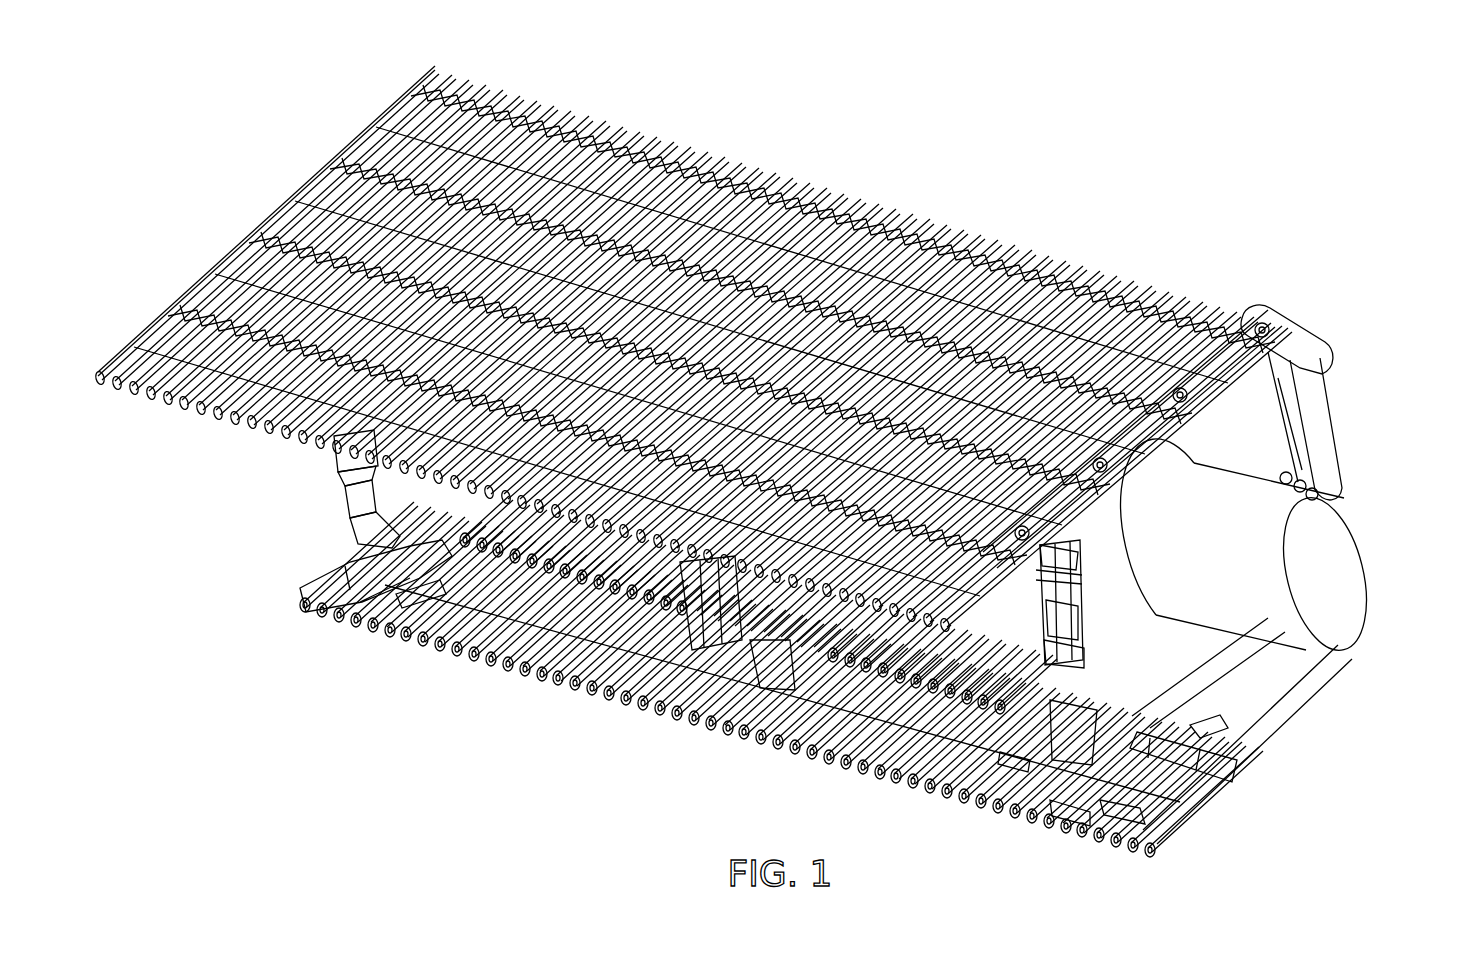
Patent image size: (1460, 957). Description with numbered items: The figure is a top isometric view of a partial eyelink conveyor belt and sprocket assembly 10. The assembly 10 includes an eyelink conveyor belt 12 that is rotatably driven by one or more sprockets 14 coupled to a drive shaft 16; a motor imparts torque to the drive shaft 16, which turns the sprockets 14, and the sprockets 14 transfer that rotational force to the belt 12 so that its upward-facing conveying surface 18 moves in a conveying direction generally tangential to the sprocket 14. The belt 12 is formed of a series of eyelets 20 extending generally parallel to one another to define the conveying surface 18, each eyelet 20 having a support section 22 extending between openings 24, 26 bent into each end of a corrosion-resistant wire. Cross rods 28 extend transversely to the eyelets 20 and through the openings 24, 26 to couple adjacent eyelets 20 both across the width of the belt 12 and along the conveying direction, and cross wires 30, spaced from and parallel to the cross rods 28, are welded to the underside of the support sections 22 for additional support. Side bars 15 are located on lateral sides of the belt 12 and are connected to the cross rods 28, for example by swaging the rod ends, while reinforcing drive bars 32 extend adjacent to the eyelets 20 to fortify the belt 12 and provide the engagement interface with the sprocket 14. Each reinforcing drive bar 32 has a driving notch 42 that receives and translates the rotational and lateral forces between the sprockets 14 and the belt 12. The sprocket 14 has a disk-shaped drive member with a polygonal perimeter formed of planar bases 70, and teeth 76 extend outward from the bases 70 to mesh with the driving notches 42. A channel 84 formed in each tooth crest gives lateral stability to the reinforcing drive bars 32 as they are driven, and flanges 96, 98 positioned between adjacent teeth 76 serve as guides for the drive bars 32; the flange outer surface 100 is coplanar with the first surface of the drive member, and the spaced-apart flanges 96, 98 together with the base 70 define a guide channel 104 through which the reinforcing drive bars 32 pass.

The eyelink conveyor belt and sprocket assembly 10 is at (1205, 169).
The eyelink conveyor belt 12 is at (277, 181).
The sprocket 14 is at (398, 556).
The side bar 15 is at (142, 338).
The drive shaft 16 is at (1338, 522).
The conveying surface 18 is at (352, 440).
The eyelet 20 is at (240, 382).
The support section 22 is at (342, 498).
The opening 24 is at (388, 520).
The opening 26 is at (660, 410).
The cross rod 28 is at (442, 80).
The cross wire 30 is at (838, 445).
The reinforcing drive bar 32 is at (470, 125).
The driving notch 42 is at (412, 600).
The planar base 70 is at (1062, 590).
The tooth 76 is at (1092, 572).
The channel 84 is at (1062, 562).
The flange 96 is at (1070, 638).
The flange 98 is at (1013, 762).
The outer surface 100 is at (1175, 682).
The guide channel 104 is at (1058, 615).